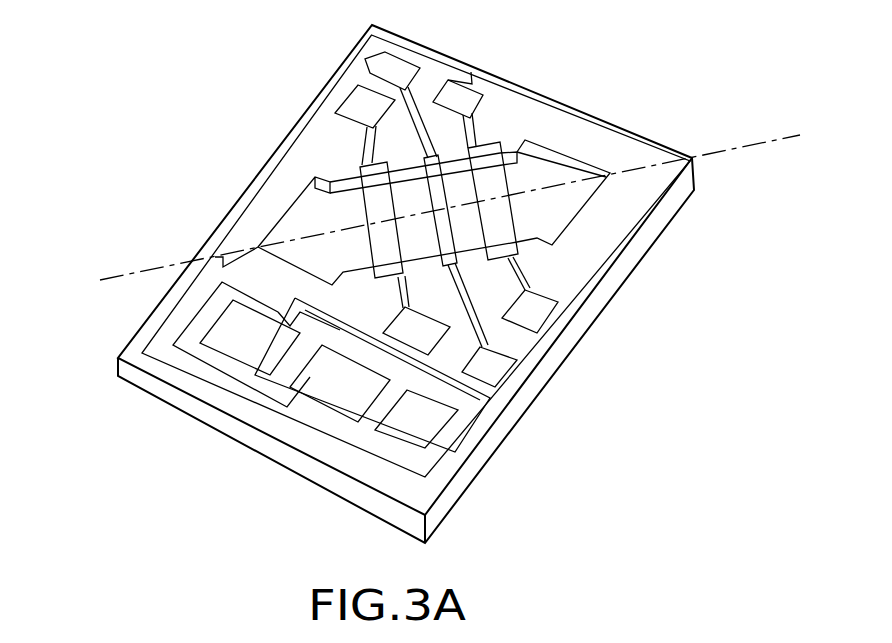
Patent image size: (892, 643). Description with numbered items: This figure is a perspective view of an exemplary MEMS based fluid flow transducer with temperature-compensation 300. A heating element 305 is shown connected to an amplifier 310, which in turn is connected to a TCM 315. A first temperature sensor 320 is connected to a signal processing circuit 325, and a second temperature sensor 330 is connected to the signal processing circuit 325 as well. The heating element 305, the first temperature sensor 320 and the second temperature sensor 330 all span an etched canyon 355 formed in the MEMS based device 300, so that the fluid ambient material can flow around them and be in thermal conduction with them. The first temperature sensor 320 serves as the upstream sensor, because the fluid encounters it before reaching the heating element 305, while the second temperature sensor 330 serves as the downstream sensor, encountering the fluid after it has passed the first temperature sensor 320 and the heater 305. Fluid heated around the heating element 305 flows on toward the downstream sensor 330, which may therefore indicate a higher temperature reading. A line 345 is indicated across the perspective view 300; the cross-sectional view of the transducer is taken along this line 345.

The MEMS based fluid flow transducer with temperature-compensation 300 is at (138, 494).
The heating element 305 is at (398, 125).
The amplifier 310 is at (437, 448).
The TCM 315 is at (310, 397).
The first temperature sensor 320 is at (363, 173).
The signal processing circuit 325 is at (217, 352).
The second temperature sensor 330 is at (490, 148).
The line 345 is at (121, 276).
The etched canyon 355 is at (412, 212).